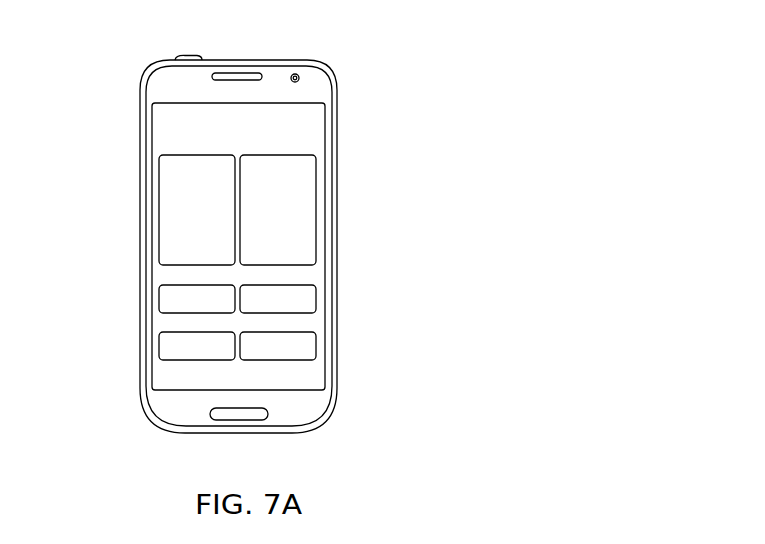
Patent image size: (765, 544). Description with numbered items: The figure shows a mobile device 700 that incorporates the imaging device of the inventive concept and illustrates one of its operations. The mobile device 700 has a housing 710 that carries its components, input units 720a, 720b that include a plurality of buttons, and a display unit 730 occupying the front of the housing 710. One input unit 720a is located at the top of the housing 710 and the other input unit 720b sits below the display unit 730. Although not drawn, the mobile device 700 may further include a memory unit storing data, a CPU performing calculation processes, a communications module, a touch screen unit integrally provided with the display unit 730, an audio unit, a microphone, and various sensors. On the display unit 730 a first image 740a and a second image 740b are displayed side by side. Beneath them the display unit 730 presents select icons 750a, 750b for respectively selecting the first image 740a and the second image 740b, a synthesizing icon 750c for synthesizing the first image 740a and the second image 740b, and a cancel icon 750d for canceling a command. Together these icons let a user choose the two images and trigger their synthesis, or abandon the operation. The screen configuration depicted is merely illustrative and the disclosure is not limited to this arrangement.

The mobile device 700 is at (240, 248).
The housing 710 is at (337, 162).
The input unit 720a is at (183, 55).
The input unit 720b is at (258, 418).
The display unit 730 is at (303, 120).
The first image 740a is at (160, 228).
The second image 740b is at (315, 233).
The select icon 750a is at (160, 297).
The select icon 750b is at (315, 300).
The synthesizing icon 750c is at (160, 344).
The cancel icon 750d is at (315, 346).